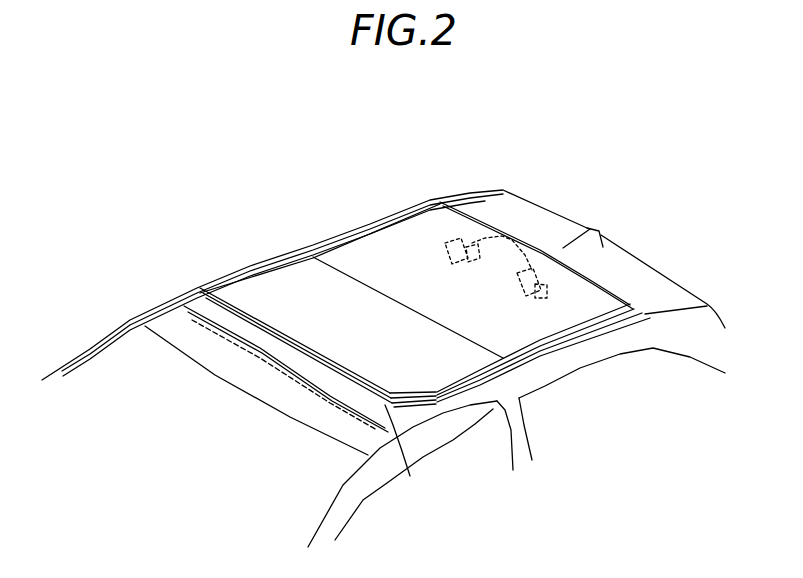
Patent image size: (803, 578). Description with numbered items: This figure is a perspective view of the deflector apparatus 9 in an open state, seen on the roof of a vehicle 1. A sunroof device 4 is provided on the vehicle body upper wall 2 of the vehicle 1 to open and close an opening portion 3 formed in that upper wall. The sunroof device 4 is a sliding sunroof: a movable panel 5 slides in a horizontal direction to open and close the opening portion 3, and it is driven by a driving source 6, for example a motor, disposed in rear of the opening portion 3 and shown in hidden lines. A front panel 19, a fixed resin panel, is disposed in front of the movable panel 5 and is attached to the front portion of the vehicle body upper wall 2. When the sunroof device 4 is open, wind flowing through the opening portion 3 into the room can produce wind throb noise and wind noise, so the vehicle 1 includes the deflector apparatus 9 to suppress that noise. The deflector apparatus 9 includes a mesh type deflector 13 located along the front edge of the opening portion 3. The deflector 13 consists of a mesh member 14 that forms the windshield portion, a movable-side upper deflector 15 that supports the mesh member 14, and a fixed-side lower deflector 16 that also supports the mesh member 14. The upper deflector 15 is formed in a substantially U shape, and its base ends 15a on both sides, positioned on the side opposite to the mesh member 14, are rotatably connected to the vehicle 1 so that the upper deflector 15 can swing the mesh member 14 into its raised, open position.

The vehicle 1 is at (171, 184).
The vehicle body upper wall 2 is at (478, 207).
The opening portion 3 is at (275, 268).
The sunroof device 4 is at (187, 285).
The movable panel 5 is at (375, 242).
The driving source 6 is at (517, 240).
The deflector apparatus 9 is at (308, 336).
The deflector 13 is at (466, 476).
The mesh member 14 is at (407, 453).
The upper deflector 15 is at (418, 408).
The base ends 15a is at (225, 277).
The lower deflector 16 is at (374, 437).
The front panel 19 is at (227, 372).